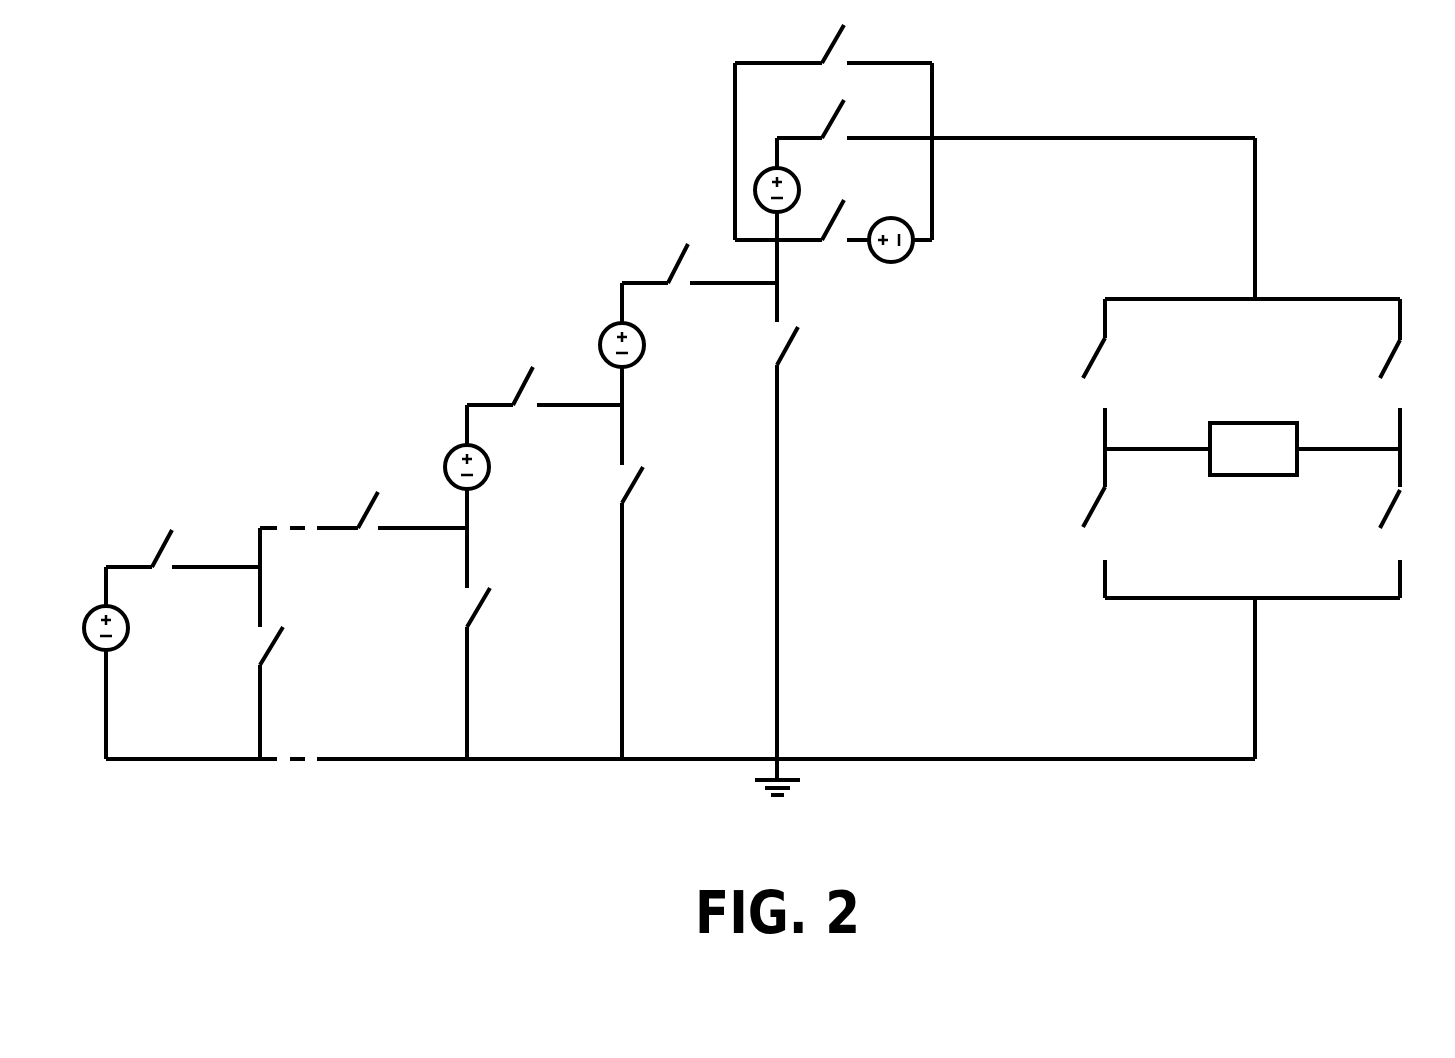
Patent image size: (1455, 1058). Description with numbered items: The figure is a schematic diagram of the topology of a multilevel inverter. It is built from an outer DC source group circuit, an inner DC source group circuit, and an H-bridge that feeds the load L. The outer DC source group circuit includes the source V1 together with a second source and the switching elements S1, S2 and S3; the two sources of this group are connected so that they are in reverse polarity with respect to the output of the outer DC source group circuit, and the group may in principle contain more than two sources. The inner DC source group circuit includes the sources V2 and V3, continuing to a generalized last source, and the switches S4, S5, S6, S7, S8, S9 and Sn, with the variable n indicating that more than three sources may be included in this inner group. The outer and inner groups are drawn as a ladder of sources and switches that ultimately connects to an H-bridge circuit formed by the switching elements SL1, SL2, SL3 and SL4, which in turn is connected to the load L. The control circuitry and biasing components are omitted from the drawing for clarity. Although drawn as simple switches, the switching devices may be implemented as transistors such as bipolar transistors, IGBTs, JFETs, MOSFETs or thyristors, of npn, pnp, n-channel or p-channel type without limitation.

The switching element S1 is at (833, 39).
The switching element S2 is at (1016, 117).
The switching element S3 is at (802, 236).
The switch S4 is at (802, 543).
The switch S5 is at (699, 263).
The switch S6 is at (643, 613).
The switch S7 is at (544, 385).
The switch S8 is at (484, 673).
The switch S9 is at (363, 510).
The switch Sn is at (278, 643).
The switching element SL1 is at (1062, 393).
The switching element SL2 is at (1408, 393).
The switching element SL3 is at (1062, 542).
The switching element SL4 is at (1415, 544).
The source V1 is at (843, 230).
The source V2 is at (636, 374).
The source V3 is at (481, 496).
The load L is at (1250, 428).